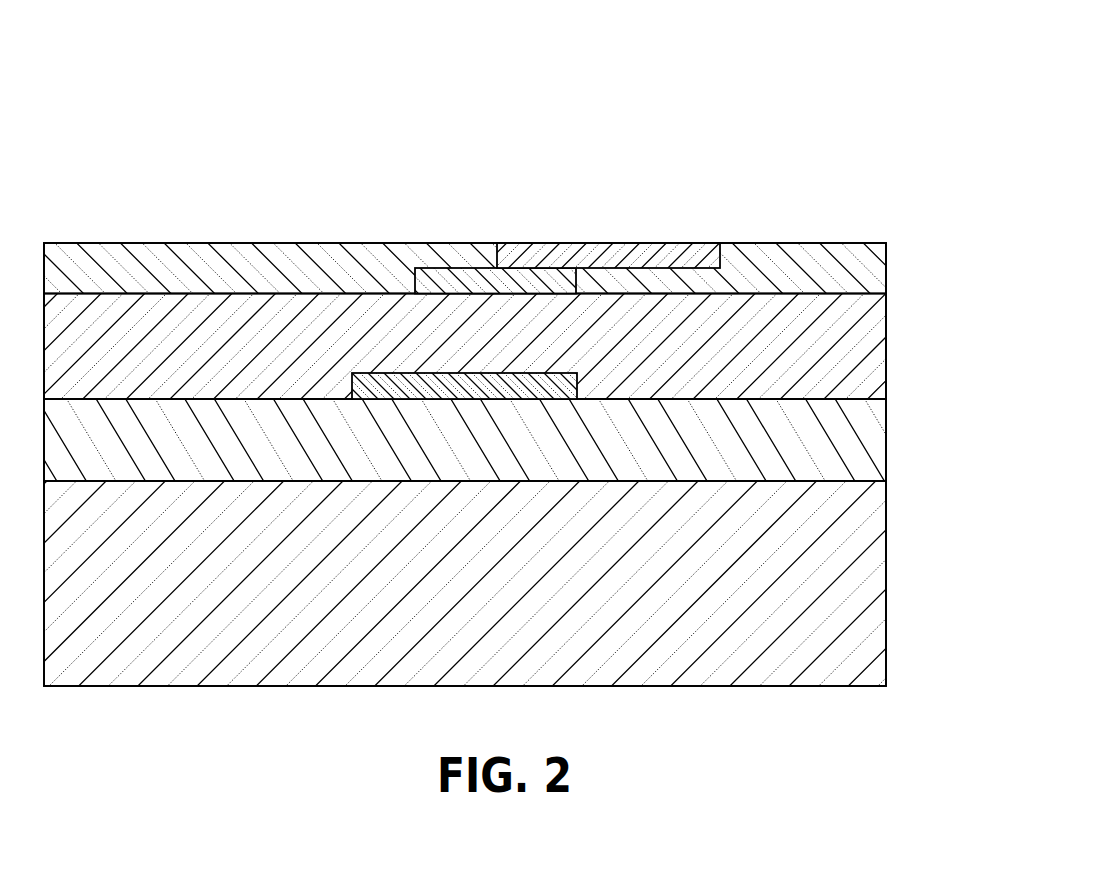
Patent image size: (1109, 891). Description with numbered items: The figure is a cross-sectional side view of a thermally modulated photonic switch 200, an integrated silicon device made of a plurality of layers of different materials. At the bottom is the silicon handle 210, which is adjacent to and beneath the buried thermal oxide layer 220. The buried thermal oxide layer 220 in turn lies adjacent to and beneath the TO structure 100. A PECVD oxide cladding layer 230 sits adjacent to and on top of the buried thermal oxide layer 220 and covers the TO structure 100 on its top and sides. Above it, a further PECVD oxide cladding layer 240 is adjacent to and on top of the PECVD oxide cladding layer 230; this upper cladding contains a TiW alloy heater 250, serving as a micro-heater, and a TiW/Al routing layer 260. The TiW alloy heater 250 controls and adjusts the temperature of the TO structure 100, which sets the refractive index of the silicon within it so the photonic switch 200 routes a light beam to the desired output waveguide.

The thermally modulated photonic switch 200 is at (818, 88).
The silicon handle 210 is at (886, 608).
The buried thermal oxide layer 220 is at (886, 458).
The PECVD oxide cladding layer 230 is at (886, 372).
The PECVD oxide cladding layer 240 is at (886, 275).
The TiW alloy heater 250 is at (453, 278).
The TiW/Al routing layer 260 is at (595, 252).
The TO structure 100 is at (385, 372).